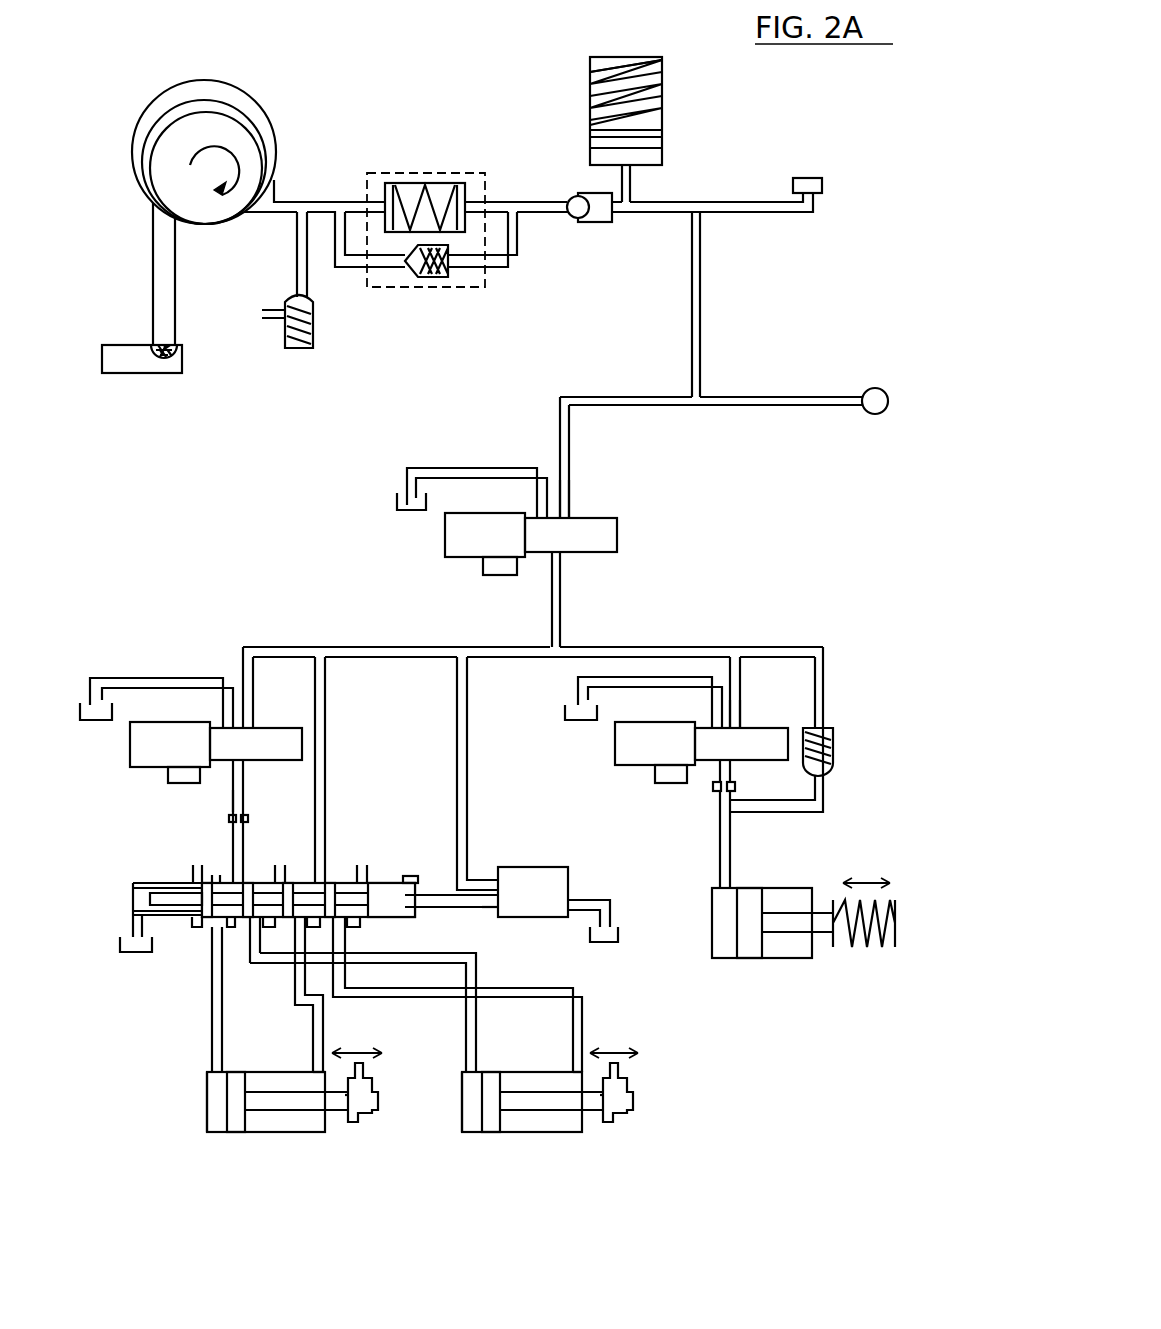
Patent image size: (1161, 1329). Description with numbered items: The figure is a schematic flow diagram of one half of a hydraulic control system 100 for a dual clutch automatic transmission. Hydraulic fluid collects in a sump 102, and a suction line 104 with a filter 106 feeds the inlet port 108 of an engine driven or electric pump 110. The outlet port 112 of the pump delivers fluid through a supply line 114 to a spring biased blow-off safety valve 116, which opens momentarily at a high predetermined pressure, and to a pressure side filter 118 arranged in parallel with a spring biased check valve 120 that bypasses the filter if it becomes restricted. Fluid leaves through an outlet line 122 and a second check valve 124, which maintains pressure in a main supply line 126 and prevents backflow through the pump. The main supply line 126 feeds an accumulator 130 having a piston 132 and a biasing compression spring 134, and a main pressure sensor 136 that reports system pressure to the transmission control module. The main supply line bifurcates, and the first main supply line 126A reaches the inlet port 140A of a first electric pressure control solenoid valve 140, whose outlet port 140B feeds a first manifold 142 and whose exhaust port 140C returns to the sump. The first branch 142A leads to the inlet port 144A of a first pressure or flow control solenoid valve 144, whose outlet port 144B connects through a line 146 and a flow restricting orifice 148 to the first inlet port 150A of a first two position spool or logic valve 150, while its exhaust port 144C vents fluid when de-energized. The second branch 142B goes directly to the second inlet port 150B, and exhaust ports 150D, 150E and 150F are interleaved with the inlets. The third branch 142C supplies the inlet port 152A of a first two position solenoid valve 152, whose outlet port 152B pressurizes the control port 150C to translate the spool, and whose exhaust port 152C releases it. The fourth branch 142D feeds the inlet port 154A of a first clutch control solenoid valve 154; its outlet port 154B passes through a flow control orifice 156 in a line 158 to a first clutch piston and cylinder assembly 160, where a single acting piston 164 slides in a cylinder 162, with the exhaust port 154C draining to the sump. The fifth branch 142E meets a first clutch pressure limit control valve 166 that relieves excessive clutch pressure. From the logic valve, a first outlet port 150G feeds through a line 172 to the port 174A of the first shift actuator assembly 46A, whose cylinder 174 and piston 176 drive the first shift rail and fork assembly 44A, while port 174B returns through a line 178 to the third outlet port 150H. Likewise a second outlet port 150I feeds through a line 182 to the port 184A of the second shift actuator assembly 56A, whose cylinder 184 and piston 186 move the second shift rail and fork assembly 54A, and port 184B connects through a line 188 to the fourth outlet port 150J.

The hydraulic control system 100 is at (752, 127).
The sump 102 is at (128, 365).
The suction line 104 is at (165, 250).
The filter 106 is at (160, 340).
The inlet port 108 is at (160, 215).
The pump 110 is at (222, 90).
The outlet port 112 is at (272, 196).
The supply line 114 is at (330, 205).
The spring biased blow-off safety valve 116 is at (320, 312).
The pressure side filter 118 is at (422, 183).
The spring biased check valve 120 is at (432, 278).
The outlet line 122 is at (532, 214).
The second check valve 124 is at (600, 218).
The main supply line 126 is at (702, 315).
The first main supply line 126A is at (560, 418).
The accumulator 130 is at (664, 100).
The piston 132 is at (662, 146).
The biasing compression spring 134 is at (630, 66).
The main pressure sensor 136 is at (818, 180).
The first electric pressure control solenoid valve 140 is at (428, 548).
The inlet port 140A is at (570, 500).
The outlet port 140B is at (558, 565).
The exhaust port 140C is at (540, 512).
The first manifold 142 is at (552, 642).
The first branch 142A is at (246, 652).
The second branch 142B is at (326, 728).
The third branch 142C is at (458, 700).
The fourth branch 142D is at (762, 636).
The fifth branch 142E is at (826, 660).
The first pressure or flow control solenoid valve 144 is at (125, 775).
The inlet port 144A is at (252, 725).
The outlet port 144B is at (245, 770).
The exhaust port 144C is at (224, 722).
The line 146 is at (232, 792).
The flow restricting orifice 148 is at (229, 822).
The first two position spool or logic valve 150 is at (122, 983).
The first inlet port 150A is at (244, 878).
The second inlet port 150B is at (358, 878).
The control port 150C is at (440, 908).
The exhaust port 150D is at (218, 873).
The exhaust port 150E is at (284, 878).
The exhaust port 150F is at (367, 876).
The first outlet port 150G is at (215, 922).
The third outlet port 150H is at (300, 922).
The second outlet port 150I is at (256, 922).
The fourth outlet port 150J is at (342, 922).
The first two position solenoid valve 152 is at (546, 839).
The inlet port 152A is at (498, 868).
The outlet port 152B is at (492, 915).
The exhaust port 152C is at (590, 898).
The first electric pressure or flow clutch control solenoid valve 154 is at (612, 774).
The inlet port 154A is at (736, 725).
The outlet port 154B is at (728, 770).
The exhaust port 154C is at (712, 724).
The flow control orifice 156 is at (712, 788).
The line 158 is at (718, 874).
The first clutch piston and cylinder assembly 160 is at (808, 985).
The cylinder 162 is at (775, 900).
The single acting piston 164 is at (748, 957).
The first clutch pressure limit control valve 166 is at (834, 750).
The line 172 is at (212, 1045).
The cylinder or housing 174 is at (286, 1135).
The port 174A is at (212, 1080).
The port 174B is at (320, 1068).
The piston 176 is at (236, 1115).
The line 178 is at (297, 1005).
The line 182 is at (468, 1050).
The housing or cylinder 184 is at (548, 1135).
The port 184A is at (468, 1080).
The port 184B is at (578, 1068).
The piston 186 is at (492, 1115).
The line 188 is at (560, 988).
The first shift rail and fork assembly 44A is at (340, 1103).
The first shift actuator assembly 46A is at (363, 1148).
The second shift rail and fork assembly 54A is at (625, 1103).
The second shift actuator assembly 56A is at (626, 1148).